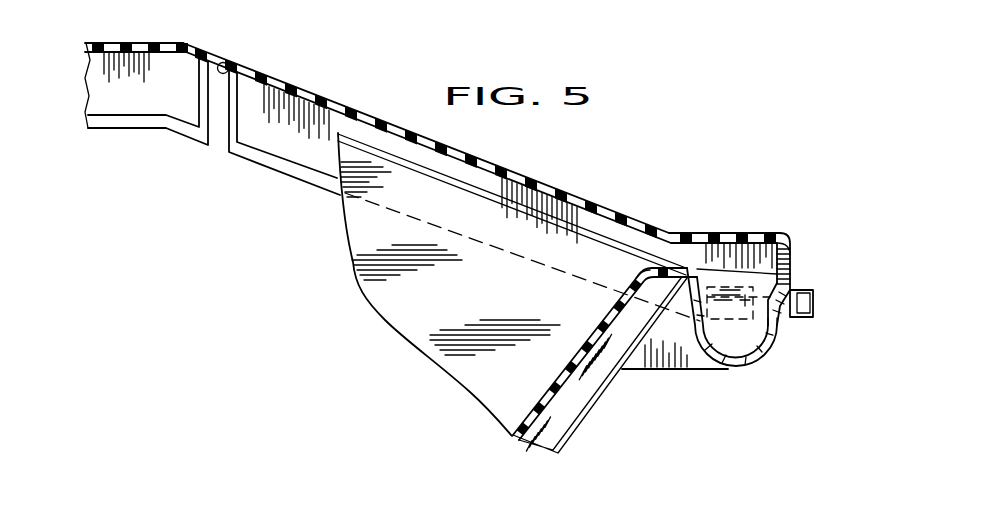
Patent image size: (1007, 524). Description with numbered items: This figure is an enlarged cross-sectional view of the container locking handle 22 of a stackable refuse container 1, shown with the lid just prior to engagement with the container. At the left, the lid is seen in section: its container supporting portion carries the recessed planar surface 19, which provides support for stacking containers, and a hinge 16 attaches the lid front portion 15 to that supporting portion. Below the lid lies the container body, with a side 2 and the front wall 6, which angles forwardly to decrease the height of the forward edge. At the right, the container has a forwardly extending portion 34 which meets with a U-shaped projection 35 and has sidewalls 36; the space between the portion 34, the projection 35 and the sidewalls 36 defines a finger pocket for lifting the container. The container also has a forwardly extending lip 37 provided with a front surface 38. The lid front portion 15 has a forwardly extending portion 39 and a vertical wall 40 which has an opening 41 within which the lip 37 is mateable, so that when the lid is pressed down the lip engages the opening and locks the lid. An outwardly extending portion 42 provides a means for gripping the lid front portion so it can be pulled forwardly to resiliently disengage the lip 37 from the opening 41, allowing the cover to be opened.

The stackable refuse container 1 is at (430, 375).
The side 2 is at (353, 263).
The front wall 6 is at (594, 384).
The lid front portion 15 is at (523, 174).
The hinge 16 is at (228, 65).
The recessed planar surface 19 is at (130, 43).
The container locking handle 22 is at (779, 223).
The forwardly extending portion 34 is at (638, 270).
The U-shaped projection 35 is at (726, 371).
The sidewalls 36 is at (723, 285).
The forwardly extending lip 37 is at (786, 321).
The front surface 38 is at (798, 318).
The forwardly extending portion 39 is at (713, 233).
The vertical wall 40 is at (792, 267).
The opening 41 is at (791, 250).
The outwardly extending portion 42 is at (813, 313).